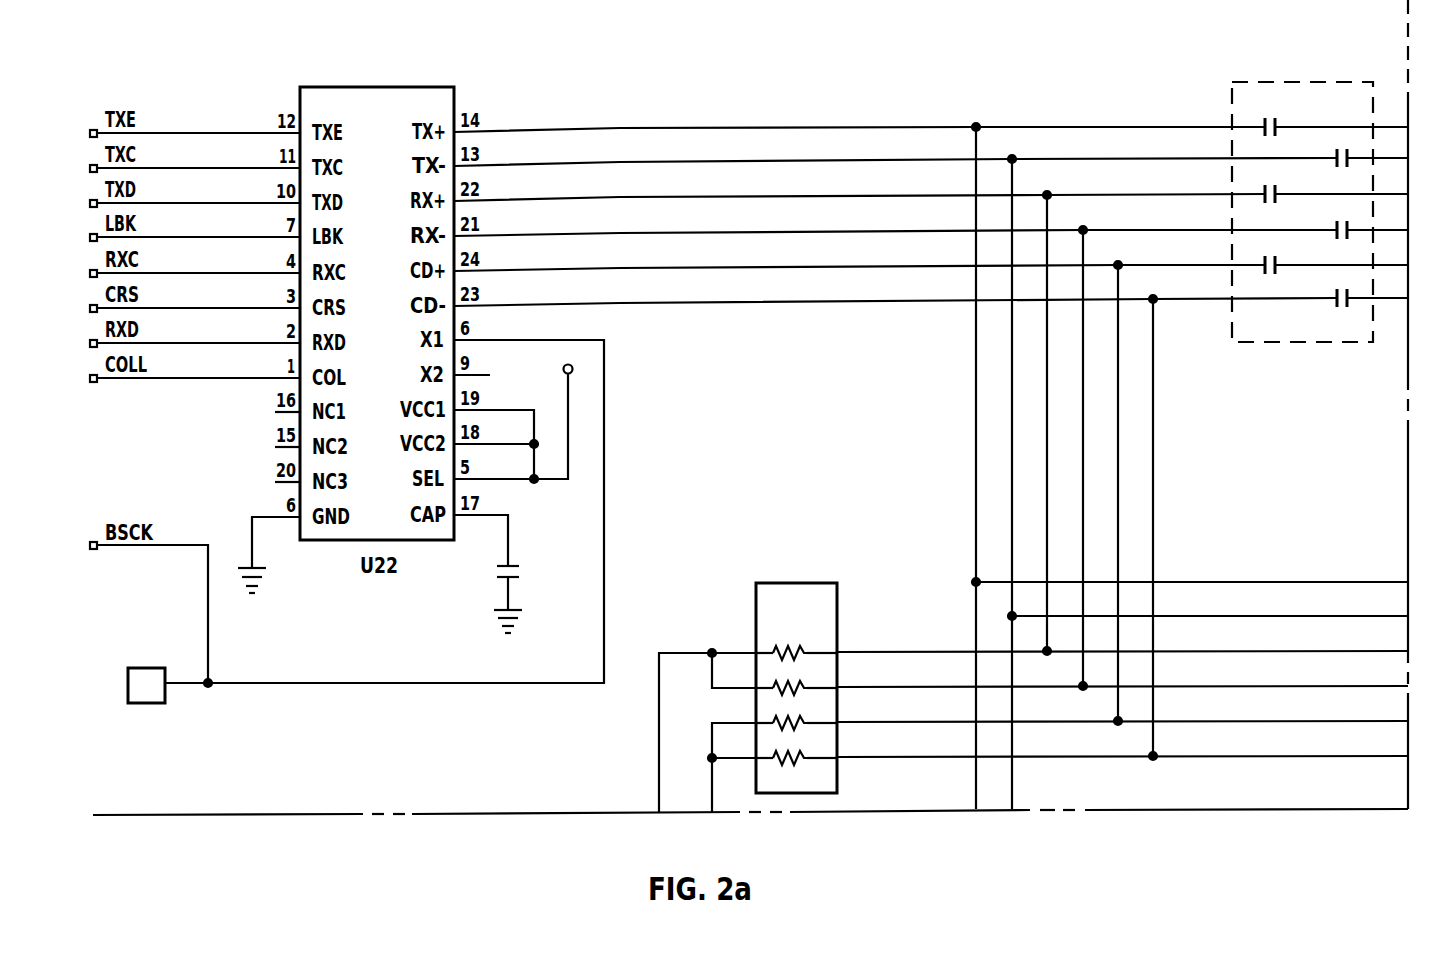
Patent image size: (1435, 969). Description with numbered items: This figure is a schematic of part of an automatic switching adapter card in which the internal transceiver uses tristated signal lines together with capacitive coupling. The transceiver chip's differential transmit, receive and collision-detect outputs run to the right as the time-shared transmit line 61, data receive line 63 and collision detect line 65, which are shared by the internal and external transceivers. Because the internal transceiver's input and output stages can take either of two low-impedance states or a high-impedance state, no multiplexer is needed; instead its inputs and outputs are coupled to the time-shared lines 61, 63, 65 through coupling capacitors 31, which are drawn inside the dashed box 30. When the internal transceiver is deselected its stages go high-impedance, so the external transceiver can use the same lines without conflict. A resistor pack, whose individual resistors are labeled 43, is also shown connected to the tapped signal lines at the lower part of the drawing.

The dashed box 30 is at (1354, 86).
The coupling capacitors 31 is at (1282, 118).
The termination resistor 43 is at (807, 688).
The transmit line 61 is at (584, 142).
The data receive line 63 is at (682, 212).
The collision detect line 65 is at (727, 290).